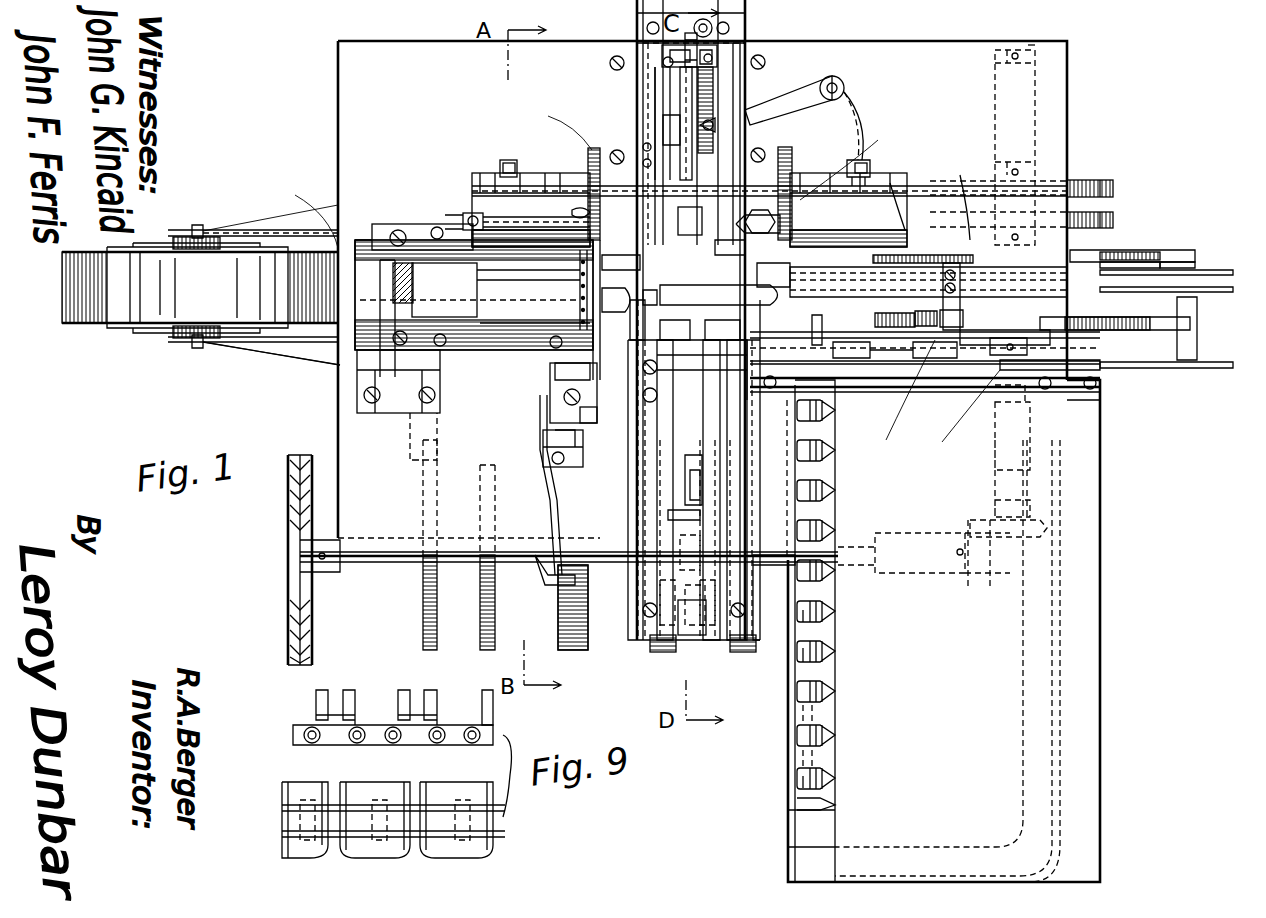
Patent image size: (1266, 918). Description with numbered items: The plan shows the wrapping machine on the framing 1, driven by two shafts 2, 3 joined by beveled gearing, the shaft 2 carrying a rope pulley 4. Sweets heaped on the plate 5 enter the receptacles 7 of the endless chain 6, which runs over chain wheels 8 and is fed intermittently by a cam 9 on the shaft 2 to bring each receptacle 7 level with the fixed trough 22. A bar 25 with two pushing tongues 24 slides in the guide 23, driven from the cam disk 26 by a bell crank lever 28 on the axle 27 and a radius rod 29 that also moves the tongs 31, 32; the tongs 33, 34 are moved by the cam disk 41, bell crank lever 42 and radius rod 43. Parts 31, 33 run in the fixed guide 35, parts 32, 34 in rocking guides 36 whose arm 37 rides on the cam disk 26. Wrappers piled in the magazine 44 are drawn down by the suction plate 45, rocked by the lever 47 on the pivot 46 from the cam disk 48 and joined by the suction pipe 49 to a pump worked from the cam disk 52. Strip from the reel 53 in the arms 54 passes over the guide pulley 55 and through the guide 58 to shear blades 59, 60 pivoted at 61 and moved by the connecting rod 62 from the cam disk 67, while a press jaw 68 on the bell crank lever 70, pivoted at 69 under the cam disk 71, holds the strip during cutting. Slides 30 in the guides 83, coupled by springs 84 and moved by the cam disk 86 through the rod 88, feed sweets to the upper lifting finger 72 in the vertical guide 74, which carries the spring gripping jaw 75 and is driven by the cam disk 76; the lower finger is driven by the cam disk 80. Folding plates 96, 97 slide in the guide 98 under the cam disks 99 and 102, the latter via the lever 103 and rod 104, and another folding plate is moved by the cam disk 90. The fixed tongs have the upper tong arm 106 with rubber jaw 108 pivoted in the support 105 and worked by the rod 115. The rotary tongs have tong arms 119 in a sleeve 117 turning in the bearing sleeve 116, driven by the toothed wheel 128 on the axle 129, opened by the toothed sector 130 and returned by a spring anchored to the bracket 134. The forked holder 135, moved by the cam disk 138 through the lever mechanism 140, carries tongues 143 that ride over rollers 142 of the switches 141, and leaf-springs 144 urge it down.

In FIG. 1, the frame plate 1 is at (702, 289).
In FIG. 1, the main shaft 2 is at (468, 566).
In FIG. 1, the bracket 3 is at (1005, 152).
In FIG. 1, the pulley 4 is at (292, 555).
In FIG. 1, the magazine casing 5 is at (943, 631).
In FIG. 1, the chain 6 is at (830, 615).
In FIG. 9, the chain 6 is at (338, 740).
In FIG. 1, the carrier cups 7 is at (828, 713).
In FIG. 9, the carrier cups 7 is at (378, 718).
In FIG. 1, the cartridge / gear 8 is at (805, 776).
In FIG. 1, the gear 9 is at (735, 652).
In FIG. 1, the slide frame 22 is at (748, 348).
In FIG. 1, the bar 23 is at (1072, 368).
In FIG. 1, the shaft 24 is at (872, 352).
In FIG. 1, the bar 25 is at (1213, 368).
In FIG. 1, the rod 26 is at (1115, 311).
In FIG. 1, the link 27 is at (905, 401).
In FIG. 1, the plate 28 is at (1000, 348).
In FIG. 1, the bracket 29 is at (1160, 330).
In FIG. 1, the guide rail 30 is at (752, 350).
In FIG. 1, the bar 31 is at (1235, 308).
In FIG. 1, the link 32 is at (963, 417).
In FIG. 1, the bar 33 is at (1222, 258).
In FIG. 1, the lever 34 is at (952, 199).
In FIG. 1, the rod 35 is at (1132, 245).
In FIG. 1, the plate 36 is at (862, 300).
In FIG. 1, the gear 37 is at (955, 332).
In FIG. 1, the rod 41 is at (1130, 248).
In FIG. 1, the lever 42 is at (935, 240).
In FIG. 1, the rod 43 is at (1163, 262).
In FIG. 1, the housing 44 is at (440, 270).
In FIG. 1, the perforated strip 45 is at (578, 286).
In FIG. 1, the block 46 is at (543, 440).
In FIG. 1, the rod 47 is at (552, 511).
In FIG. 1, the gear 48 is at (560, 630).
In FIG. 1, the pawl 49 is at (578, 208).
In FIG. 1, the gear 52 is at (487, 648).
In FIG. 1, the drum 53 is at (200, 287).
In FIG. 1, the rod 54 is at (236, 228).
In FIG. 1, the lever 55 is at (270, 210).
In FIG. 1, the block 58 is at (398, 229).
In FIG. 1, the cam 59 is at (616, 289).
In FIG. 1, the bar 60 is at (585, 320).
In FIG. 1, the block 61 is at (587, 393).
In FIG. 1, the block 62 is at (580, 415).
In FIG. 1, the gear 67 is at (588, 630).
In FIG. 1, the bracket 68 is at (382, 268).
In FIG. 1, the block 69 is at (440, 370).
In FIG. 1, the rod 70 is at (385, 330).
In FIG. 1, the shaft 71 is at (423, 503).
In FIG. 1, the block 72 is at (700, 335).
In FIG. 1, the block 74 is at (648, 300).
In FIG. 1, the plate 75 is at (665, 255).
In FIG. 1, the plate 76 is at (1110, 402).
In FIG. 1, the rack 80 is at (1107, 311).
In FIG. 1, the slide 83 is at (738, 452).
In FIG. 1, the slide 84 is at (740, 520).
In FIG. 1, the block 86 is at (668, 652).
In FIG. 1, the block 88 is at (707, 620).
In FIG. 1, the nut 90 is at (1113, 220).
In FIG. 1, the bar 96 is at (600, 300).
In FIG. 1, the cam 97 is at (735, 290).
In FIG. 1, the rod 98 is at (655, 402).
In FIG. 1, the gear 99 is at (652, 652).
In FIG. 1, the gear 102 is at (756, 620).
In FIG. 1, the block 103 is at (694, 482).
In FIG. 1, the bar 104 is at (690, 457).
In FIG. 1, the lever 105 is at (720, 90).
In FIG. 1, the rod 106 is at (663, 78).
In FIG. 1, the bolt 108 is at (760, 210).
In FIG. 1, the block 115 is at (668, 50).
In FIG. 1, the cylinder 116 is at (492, 214).
In FIG. 1, the gear 117 is at (600, 165).
In FIG. 1, the block 119 is at (705, 236).
In FIG. 1, the spring 128 is at (707, 151).
In FIG. 1, the block 129 is at (545, 185).
In FIG. 1, the pin 130 is at (500, 168).
In FIG. 1, the shaft 134 is at (517, 215).
In FIG. 1, the nut 135 is at (867, 160).
In FIG. 1, the nut 138 is at (1113, 185).
In FIG. 1, the lever 140 is at (742, 40).
In FIG. 1, the block 141 is at (665, 125).
In FIG. 1, the pawl 142 is at (698, 118).
In FIG. 1, the rod 143 is at (715, 130).
In FIG. 1, the bracket 144 is at (640, 27).